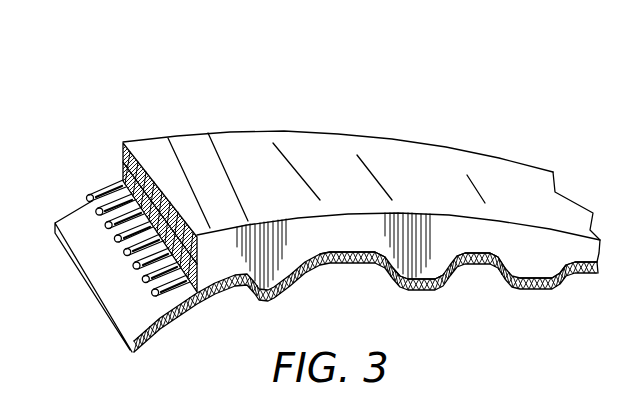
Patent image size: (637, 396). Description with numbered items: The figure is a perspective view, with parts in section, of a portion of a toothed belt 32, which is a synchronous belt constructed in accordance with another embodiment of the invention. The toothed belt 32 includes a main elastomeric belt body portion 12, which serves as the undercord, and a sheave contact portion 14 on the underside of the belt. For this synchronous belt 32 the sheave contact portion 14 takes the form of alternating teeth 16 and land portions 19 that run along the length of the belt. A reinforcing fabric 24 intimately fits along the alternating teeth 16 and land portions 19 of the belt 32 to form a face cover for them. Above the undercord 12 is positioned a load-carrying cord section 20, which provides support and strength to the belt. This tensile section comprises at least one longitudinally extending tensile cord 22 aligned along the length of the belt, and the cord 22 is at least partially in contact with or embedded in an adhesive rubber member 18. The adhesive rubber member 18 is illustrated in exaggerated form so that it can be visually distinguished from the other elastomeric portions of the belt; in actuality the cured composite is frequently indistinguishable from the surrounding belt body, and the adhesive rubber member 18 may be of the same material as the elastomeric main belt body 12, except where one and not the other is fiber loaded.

The main elastomeric belt body portion 12 is at (275, 273).
The sheave contact portion 14 is at (494, 268).
The teeth 16 is at (556, 284).
The adhesive rubber member 18 is at (133, 182).
The land portions 19 is at (333, 258).
The load-carrying cord section 20 is at (110, 167).
The tensile cord 22 is at (133, 236).
The reinforcing fabric 24 is at (411, 281).
The toothed belt 32 is at (257, 108).